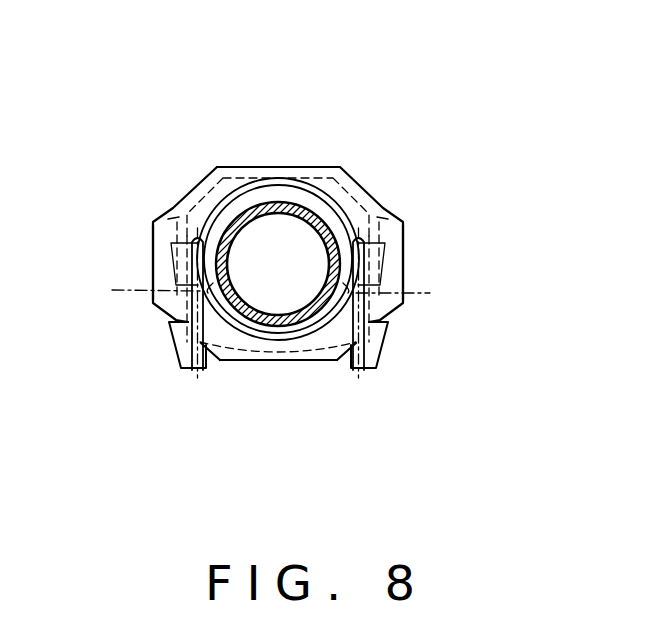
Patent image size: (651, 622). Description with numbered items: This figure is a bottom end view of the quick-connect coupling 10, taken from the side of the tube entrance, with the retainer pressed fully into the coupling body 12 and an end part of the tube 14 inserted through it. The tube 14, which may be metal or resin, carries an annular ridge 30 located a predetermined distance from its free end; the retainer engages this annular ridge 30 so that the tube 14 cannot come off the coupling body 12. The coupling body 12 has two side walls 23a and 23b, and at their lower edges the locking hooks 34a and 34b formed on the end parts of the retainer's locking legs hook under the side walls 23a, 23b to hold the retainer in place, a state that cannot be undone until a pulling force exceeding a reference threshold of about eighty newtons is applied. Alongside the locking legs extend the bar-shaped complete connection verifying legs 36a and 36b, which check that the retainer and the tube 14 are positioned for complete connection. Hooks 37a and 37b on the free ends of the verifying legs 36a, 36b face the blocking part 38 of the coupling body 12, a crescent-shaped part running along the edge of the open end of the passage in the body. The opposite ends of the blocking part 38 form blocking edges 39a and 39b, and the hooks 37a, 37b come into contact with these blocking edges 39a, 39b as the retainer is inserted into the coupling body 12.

The quick-connect coupling 10 is at (197, 118).
The coupling body 12 is at (354, 176).
The tube 14 is at (277, 201).
The side wall 23a is at (153, 233).
The side wall 23b is at (403, 232).
The annular ridge 30 is at (258, 330).
The locking hook 34a is at (168, 332).
The locking hook 34b is at (386, 337).
The complete connection verifying leg 36a is at (131, 288).
The complete connection verifying leg 36b is at (420, 301).
The hook 37a is at (213, 345).
The hook 37b is at (338, 342).
The blocking part 38 is at (297, 362).
The blocking edge 39a is at (228, 277).
The blocking edge 39b is at (330, 262).